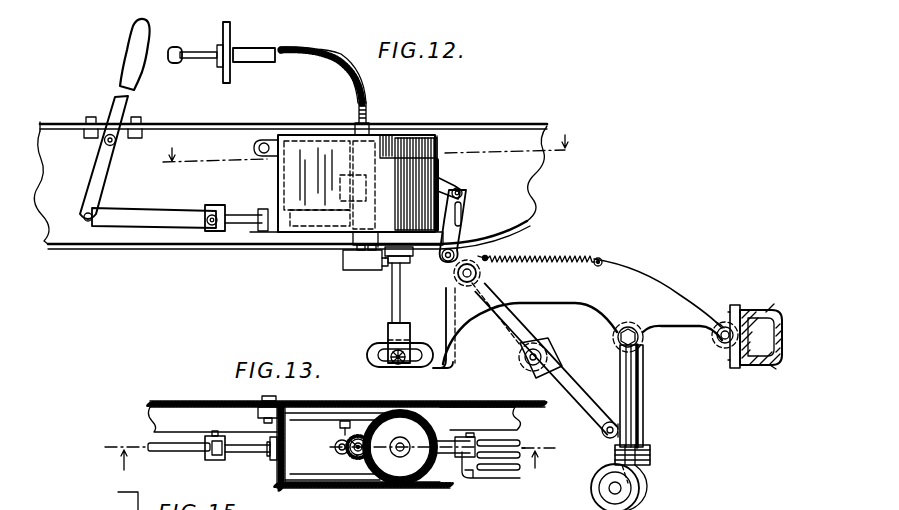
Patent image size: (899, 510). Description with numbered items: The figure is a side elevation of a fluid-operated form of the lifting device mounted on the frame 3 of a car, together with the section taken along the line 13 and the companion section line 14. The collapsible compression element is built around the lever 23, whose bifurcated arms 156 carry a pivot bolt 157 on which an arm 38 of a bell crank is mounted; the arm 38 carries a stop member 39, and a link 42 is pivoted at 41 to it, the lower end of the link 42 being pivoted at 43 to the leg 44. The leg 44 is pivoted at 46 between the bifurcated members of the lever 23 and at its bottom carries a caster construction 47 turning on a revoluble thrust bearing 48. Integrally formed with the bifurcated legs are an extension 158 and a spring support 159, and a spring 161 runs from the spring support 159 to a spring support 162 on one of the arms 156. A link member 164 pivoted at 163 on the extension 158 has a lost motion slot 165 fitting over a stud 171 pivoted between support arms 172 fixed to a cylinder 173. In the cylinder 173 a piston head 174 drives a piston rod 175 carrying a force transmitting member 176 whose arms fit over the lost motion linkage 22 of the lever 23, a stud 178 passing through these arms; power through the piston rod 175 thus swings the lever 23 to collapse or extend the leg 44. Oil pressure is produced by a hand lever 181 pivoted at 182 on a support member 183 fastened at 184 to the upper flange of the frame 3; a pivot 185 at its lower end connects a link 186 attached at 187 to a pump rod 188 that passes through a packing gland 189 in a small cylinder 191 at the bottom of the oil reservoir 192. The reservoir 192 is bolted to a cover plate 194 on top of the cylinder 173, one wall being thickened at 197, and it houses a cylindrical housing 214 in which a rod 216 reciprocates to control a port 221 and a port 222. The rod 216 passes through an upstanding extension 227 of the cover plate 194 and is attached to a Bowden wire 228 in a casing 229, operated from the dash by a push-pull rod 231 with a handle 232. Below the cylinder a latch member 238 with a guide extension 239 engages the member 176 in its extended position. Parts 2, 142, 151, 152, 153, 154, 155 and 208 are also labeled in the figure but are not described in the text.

In FIG. 12, the frame member 2 is at (770, 312).
In FIG. 12, the frame 3 is at (49, 133).
In FIG. 13, the frame 3 is at (212, 401).
In FIG. 12, the section line 13 is at (366, 139).
In FIG. 13, the section line 14 is at (330, 467).
In FIG. 12, the lost motion linkage 22 is at (384, 368).
In FIG. 12, the lever 23 is at (441, 369).
In FIG. 12, the arm of bell crank lever 38 is at (530, 330).
In FIG. 13, the arm of bell crank lever 38 is at (510, 447).
In FIG. 12, the stop member 39 is at (559, 362).
In FIG. 12, the pivot 41 is at (526, 364).
In FIG. 12, the link 42 is at (578, 412).
In FIG. 12, the pivot 43 is at (606, 437).
In FIG. 12, the leg 44 is at (645, 398).
In FIG. 12, the pivot 46 is at (641, 338).
In FIG. 12, the caster construction 47 is at (641, 492).
In FIG. 12, the revoluble thrust bearing 48 is at (652, 453).
In FIG. 12, the slide block 142 is at (387, 330).
In FIG. 12, the arm 151 is at (624, 272).
In FIG. 12, the arm end 152 is at (694, 314).
In FIG. 12, the pivot eye 153 is at (718, 346).
In FIG. 12, the bracket 154 is at (740, 305).
In FIG. 12, the bracket end 155 is at (768, 367).
In FIG. 12, the bifurcated arms 156 is at (472, 337).
In FIG. 13, the bifurcated arms 156 is at (493, 478).
In FIG. 12, the pivot bolt 157 is at (498, 280).
In FIG. 12, the extension 158 is at (401, 281).
In FIG. 12, the spring support 159 is at (490, 258).
In FIG. 12, the spring 161 is at (560, 258).
In FIG. 12, the spring support 162 is at (602, 258).
In FIG. 12, the pivot 163 is at (443, 261).
In FIG. 12, the link member 164 is at (458, 232).
In FIG. 12, the lost motion slot 165 is at (462, 208).
In FIG. 12, the stud 171 is at (459, 191).
In FIG. 13, the stud 171 is at (472, 433).
In FIG. 12, the support arms 172 is at (441, 182).
In FIG. 13, the support arms 172 is at (476, 440).
In FIG. 12, the cylinder 173 is at (441, 166).
In FIG. 13, the cylinder 173 is at (436, 436).
In FIG. 13, the piston head 174 is at (418, 478).
In FIG. 12, the piston rod 175 is at (401, 300).
In FIG. 12, the force transmitting member 176 is at (408, 324).
In FIG. 12, the stud 178 is at (392, 355).
In FIG. 12, the hand lever 181 is at (142, 25).
In FIG. 12, the pivot 182 is at (115, 148).
In FIG. 12, the support member 183 is at (88, 138).
In FIG. 12, the bolts or rivets 184 is at (90, 117).
In FIG. 12, the pivot 185 is at (83, 219).
In FIG. 12, the link 186 is at (142, 210).
In FIG. 13, the link 186 is at (174, 451).
In FIG. 12, the attachment point 187 is at (212, 209).
In FIG. 13, the attachment point 187 is at (212, 458).
In FIG. 12, the pump rod 188 is at (245, 213).
In FIG. 13, the pump rod 188 is at (247, 452).
In FIG. 13, the packing gland 189 is at (271, 458).
In FIG. 13, the small cylinder 191 is at (330, 460).
In FIG. 12, the oil reservoir 192 is at (282, 176).
In FIG. 13, the oil reservoir 192 is at (296, 488).
In FIG. 12, the cover plate 194 is at (400, 135).
In FIG. 13, the thickened wall portion 197 is at (335, 446).
In FIG. 13, the nut 208 is at (340, 424).
In FIG. 13, the cylindrical housing 214 is at (357, 458).
In FIG. 13, the rod 216 is at (358, 462).
In FIG. 13, the port 221 is at (542, 495).
In FIG. 13, the port 222 is at (358, 437).
In FIG. 12, the upstanding extension 227 is at (371, 125).
In FIG. 13, the Bowden wire 228 is at (331, 495).
In FIG. 12, the casing 229 is at (348, 65).
In FIG. 12, the push-pull rod 231 is at (202, 58).
In FIG. 12, the handle 232 is at (173, 64).
In FIG. 12, the latch member 238 is at (382, 270).
In FIG. 12, the guide extension 239 is at (350, 258).